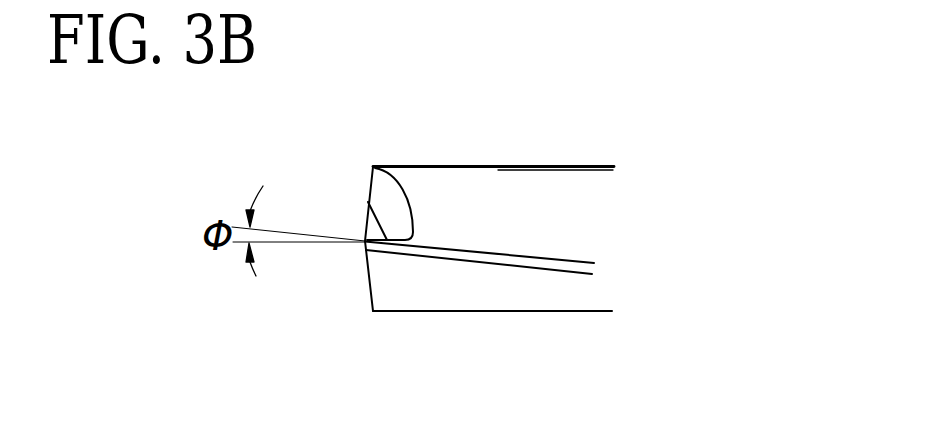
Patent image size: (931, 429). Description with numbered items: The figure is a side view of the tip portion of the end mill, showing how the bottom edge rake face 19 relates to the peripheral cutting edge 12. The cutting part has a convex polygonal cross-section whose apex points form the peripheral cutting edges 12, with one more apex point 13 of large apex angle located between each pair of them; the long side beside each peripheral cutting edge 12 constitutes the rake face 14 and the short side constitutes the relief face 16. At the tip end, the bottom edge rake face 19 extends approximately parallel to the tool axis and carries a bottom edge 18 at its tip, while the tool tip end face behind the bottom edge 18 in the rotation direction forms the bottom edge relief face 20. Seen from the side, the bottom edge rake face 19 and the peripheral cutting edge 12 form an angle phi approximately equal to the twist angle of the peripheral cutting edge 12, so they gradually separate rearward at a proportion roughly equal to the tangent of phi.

The peripheral cutting edge 12 is at (542, 257).
The apex point 13 is at (572, 273).
The rake face 14 is at (502, 187).
The relief face 16 is at (475, 258).
The bottom edge 18 is at (366, 224).
The bottom edge rake face 19 is at (371, 194).
The bottom edge relief face 20 is at (368, 272).